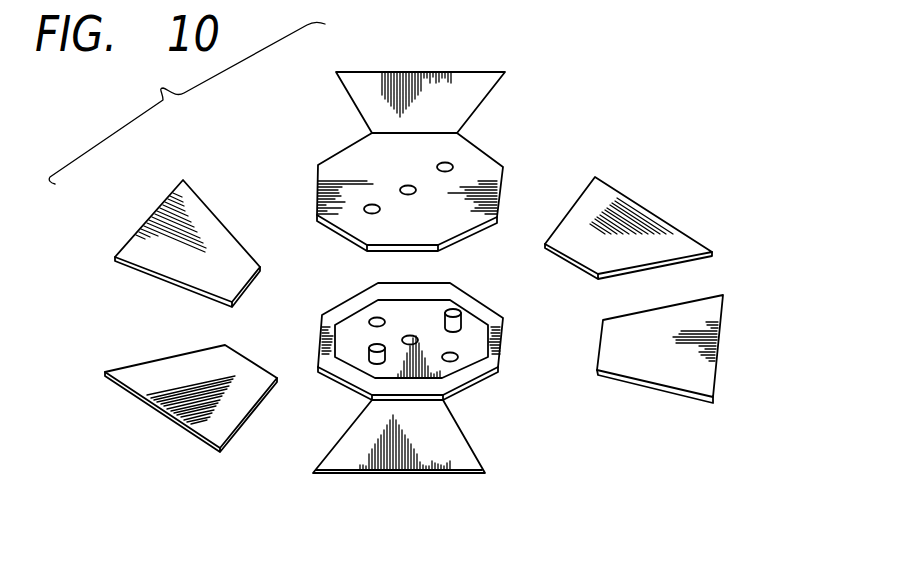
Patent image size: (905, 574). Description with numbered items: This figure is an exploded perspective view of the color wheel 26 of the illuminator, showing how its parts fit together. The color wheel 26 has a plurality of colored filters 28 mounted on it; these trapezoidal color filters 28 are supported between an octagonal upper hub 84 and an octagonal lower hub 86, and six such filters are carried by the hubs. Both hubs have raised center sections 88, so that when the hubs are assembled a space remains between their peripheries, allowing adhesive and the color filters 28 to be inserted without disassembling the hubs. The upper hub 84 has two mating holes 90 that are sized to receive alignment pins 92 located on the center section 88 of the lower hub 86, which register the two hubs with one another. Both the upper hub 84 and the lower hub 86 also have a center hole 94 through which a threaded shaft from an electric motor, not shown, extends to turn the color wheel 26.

The color wheel 26 is at (702, 126).
The colored filters 28 is at (163, 199).
The upper hub 84 is at (492, 158).
The lower hub 86 is at (498, 310).
The raised center section 88 is at (476, 326).
The mating holes 90 is at (368, 203).
The alignment pins 92 is at (447, 334).
The center hole 94 is at (408, 184).